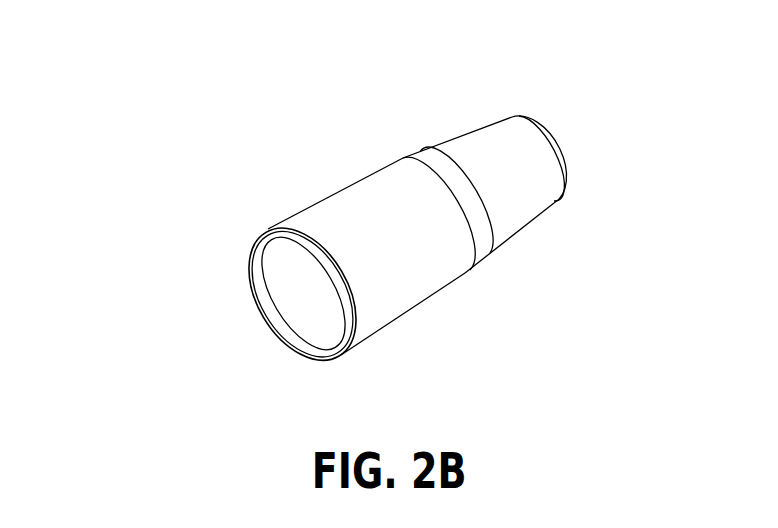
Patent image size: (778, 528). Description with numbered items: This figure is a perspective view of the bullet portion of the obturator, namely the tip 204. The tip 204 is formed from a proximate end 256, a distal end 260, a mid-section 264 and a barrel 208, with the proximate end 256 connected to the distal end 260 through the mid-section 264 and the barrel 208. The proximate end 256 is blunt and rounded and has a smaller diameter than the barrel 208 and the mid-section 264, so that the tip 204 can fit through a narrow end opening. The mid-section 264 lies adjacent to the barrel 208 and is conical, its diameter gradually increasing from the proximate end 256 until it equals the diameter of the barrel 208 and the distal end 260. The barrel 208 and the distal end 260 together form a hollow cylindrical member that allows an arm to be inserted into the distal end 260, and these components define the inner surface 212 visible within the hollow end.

The tip 204 is at (136, 80).
The barrel 208 is at (373, 182).
The inner surface 212 is at (307, 292).
The proximate end 256 is at (575, 173).
The distal end 260 is at (298, 315).
The mid-section 264 is at (477, 143).